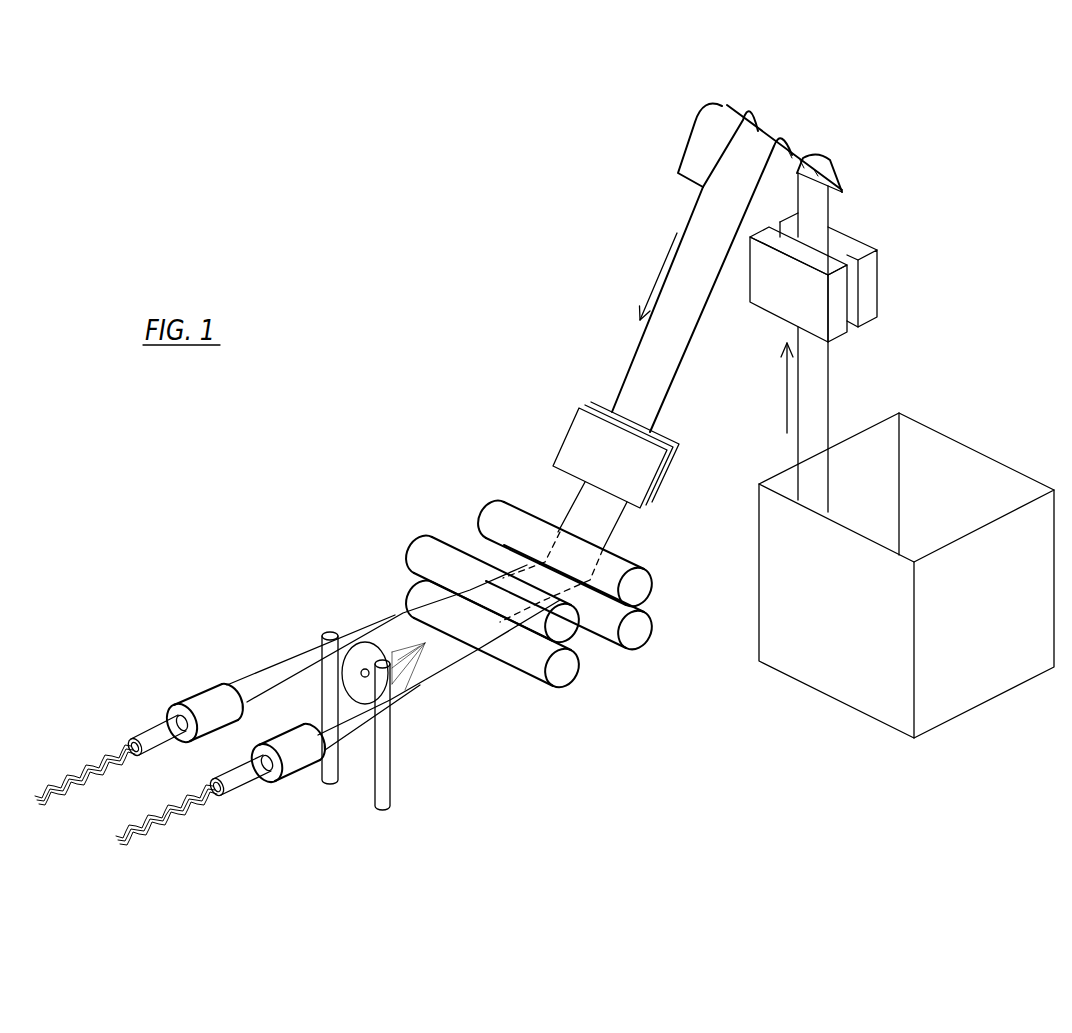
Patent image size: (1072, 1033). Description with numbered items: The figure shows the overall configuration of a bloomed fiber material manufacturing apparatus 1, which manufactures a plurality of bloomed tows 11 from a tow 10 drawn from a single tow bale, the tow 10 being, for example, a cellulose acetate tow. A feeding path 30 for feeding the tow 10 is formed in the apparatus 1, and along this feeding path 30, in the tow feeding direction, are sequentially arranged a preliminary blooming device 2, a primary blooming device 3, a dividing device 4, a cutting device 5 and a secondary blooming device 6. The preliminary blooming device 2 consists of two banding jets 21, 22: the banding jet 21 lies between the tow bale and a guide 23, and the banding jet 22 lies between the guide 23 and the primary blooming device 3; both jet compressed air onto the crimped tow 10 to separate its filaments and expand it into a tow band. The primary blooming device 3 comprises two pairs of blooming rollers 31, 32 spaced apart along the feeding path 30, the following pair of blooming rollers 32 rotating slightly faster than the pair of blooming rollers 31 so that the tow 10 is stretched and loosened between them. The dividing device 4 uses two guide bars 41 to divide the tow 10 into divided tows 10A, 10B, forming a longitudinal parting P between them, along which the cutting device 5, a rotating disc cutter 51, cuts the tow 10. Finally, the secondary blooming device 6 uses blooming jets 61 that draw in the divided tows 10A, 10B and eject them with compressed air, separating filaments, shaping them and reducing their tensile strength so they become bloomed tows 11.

The bloomed fiber material manufacturing apparatus 1 is at (332, 170).
The preliminary blooming device 2 is at (885, 223).
The primary blooming device 3 is at (562, 646).
The dividing device 4 is at (362, 686).
The cutting device 5 is at (345, 620).
The disc cutter 51 is at (365, 673).
The secondary blooming device 6 is at (176, 751).
The tow 10 is at (815, 400).
The divided tow 10A is at (270, 677).
The divided tow 10B is at (338, 803).
The bloomed tow 11 is at (78, 773).
The banding jet 21 is at (878, 280).
The banding jet 22 is at (578, 412).
The guide 23 is at (678, 168).
The feeding path 30 is at (657, 283).
The pair of blooming rollers 31 is at (643, 648).
The pair of blooming rollers 32 is at (575, 677).
The guide bar 41 is at (322, 637).
The blooming jet 61 is at (183, 705).
The parting P is at (428, 648).